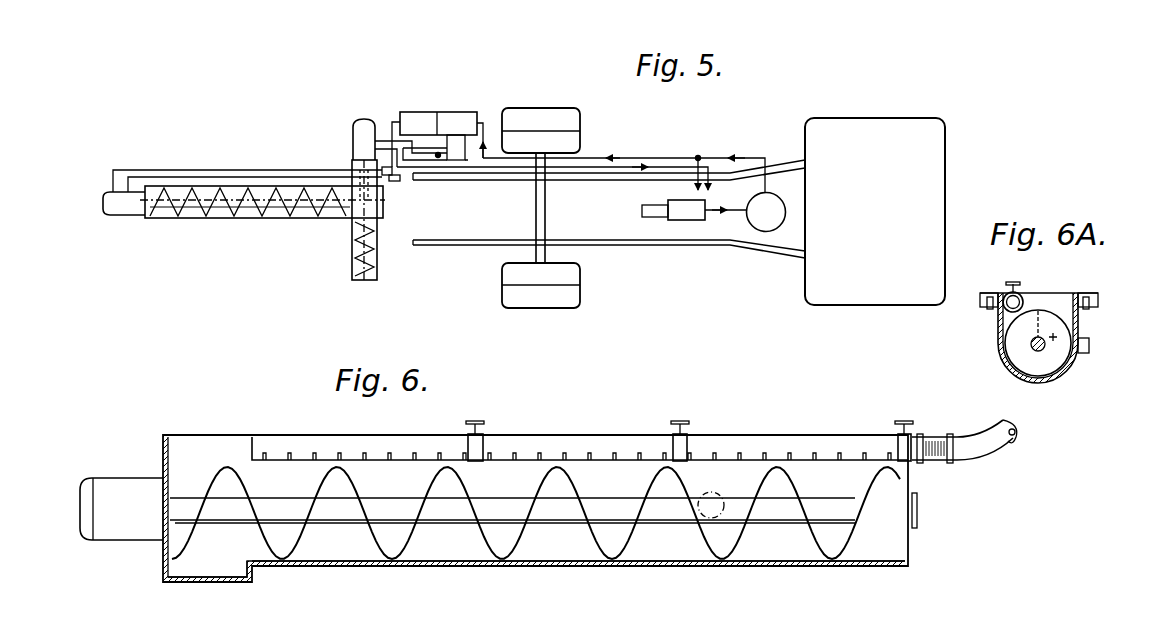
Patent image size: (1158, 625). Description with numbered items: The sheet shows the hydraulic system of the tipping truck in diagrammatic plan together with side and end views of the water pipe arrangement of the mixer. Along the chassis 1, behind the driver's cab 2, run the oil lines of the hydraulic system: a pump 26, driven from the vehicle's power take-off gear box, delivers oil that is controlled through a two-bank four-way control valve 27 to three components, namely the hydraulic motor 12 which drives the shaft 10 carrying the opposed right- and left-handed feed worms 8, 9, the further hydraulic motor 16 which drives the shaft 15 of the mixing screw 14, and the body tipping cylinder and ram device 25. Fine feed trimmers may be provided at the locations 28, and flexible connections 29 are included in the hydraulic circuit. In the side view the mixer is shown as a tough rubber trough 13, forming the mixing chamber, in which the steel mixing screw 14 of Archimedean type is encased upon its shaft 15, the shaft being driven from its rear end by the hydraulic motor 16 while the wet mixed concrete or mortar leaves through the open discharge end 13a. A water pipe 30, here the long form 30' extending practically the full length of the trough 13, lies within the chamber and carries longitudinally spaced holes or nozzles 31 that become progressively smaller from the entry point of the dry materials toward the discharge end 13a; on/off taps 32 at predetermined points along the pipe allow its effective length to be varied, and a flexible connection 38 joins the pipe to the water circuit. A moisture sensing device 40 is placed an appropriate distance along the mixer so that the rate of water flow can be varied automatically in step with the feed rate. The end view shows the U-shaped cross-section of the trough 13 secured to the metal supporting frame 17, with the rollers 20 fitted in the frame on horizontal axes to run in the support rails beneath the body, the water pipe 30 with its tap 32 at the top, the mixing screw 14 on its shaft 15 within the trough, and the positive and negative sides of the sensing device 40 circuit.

In FIG. 5, the chassis 1 is at (708, 247).
In FIG. 5, the driver's cab 2 is at (880, 217).
In FIG. 5, the right-handed feed worm 8 is at (352, 267).
In FIG. 5, the left-handed feed worm 9 is at (364, 221).
In FIG. 5, the shaft 10 is at (378, 262).
In FIG. 5, the hydraulic motor 12 is at (363, 134).
In FIG. 6, the trough 13 is at (647, 565).
In FIG. 6A, the trough 13 is at (1002, 367).
In FIG. 6, the discharge end 13a is at (230, 578).
In FIG. 5, the mixing screw 14 is at (280, 210).
In FIG. 6, the mixing screw 14 is at (407, 560).
In FIG. 6A, the mixing screw 14 is at (1033, 372).
In FIG. 5, the shaft 15 is at (198, 212).
In FIG. 6, the shaft 15 is at (542, 521).
In FIG. 6A, the shaft 15 is at (1043, 351).
In FIG. 5, the hydraulic motor 16 is at (125, 206).
In FIG. 6, the hydraulic motor 16 is at (122, 530).
In FIG. 6A, the metal supporting frame 17 is at (1095, 293).
In FIG. 6A, the rollers 20 is at (992, 310).
In FIG. 5, the body tipping cylinder and ram device 25 is at (670, 221).
In FIG. 5, the pump 26 is at (763, 222).
In FIG. 5, the 2-bank-4-way control valve 27 is at (463, 108).
In FIG. 5, the fine feed trimmers 28 is at (402, 149).
In FIG. 5, the flexible connections 29 is at (390, 183).
In FIG. 6, the water pipe 30 is at (578, 587).
In FIG. 6A, the water pipe 30 is at (1039, 290).
In FIG. 6, the water pipe 30' is at (580, 422).
In FIG. 6, the holes or nozzles 31 is at (340, 453).
In FIG. 6, the on/off taps 32 is at (483, 421).
In FIG. 6A, the on/off taps 32 is at (1012, 281).
In FIG. 6, the flexible connection 38 is at (988, 442).
In FIG. 6, the moisture sensing device 40 is at (705, 510).
In FIG. 6A, the moisture sensing device 40 is at (1090, 352).